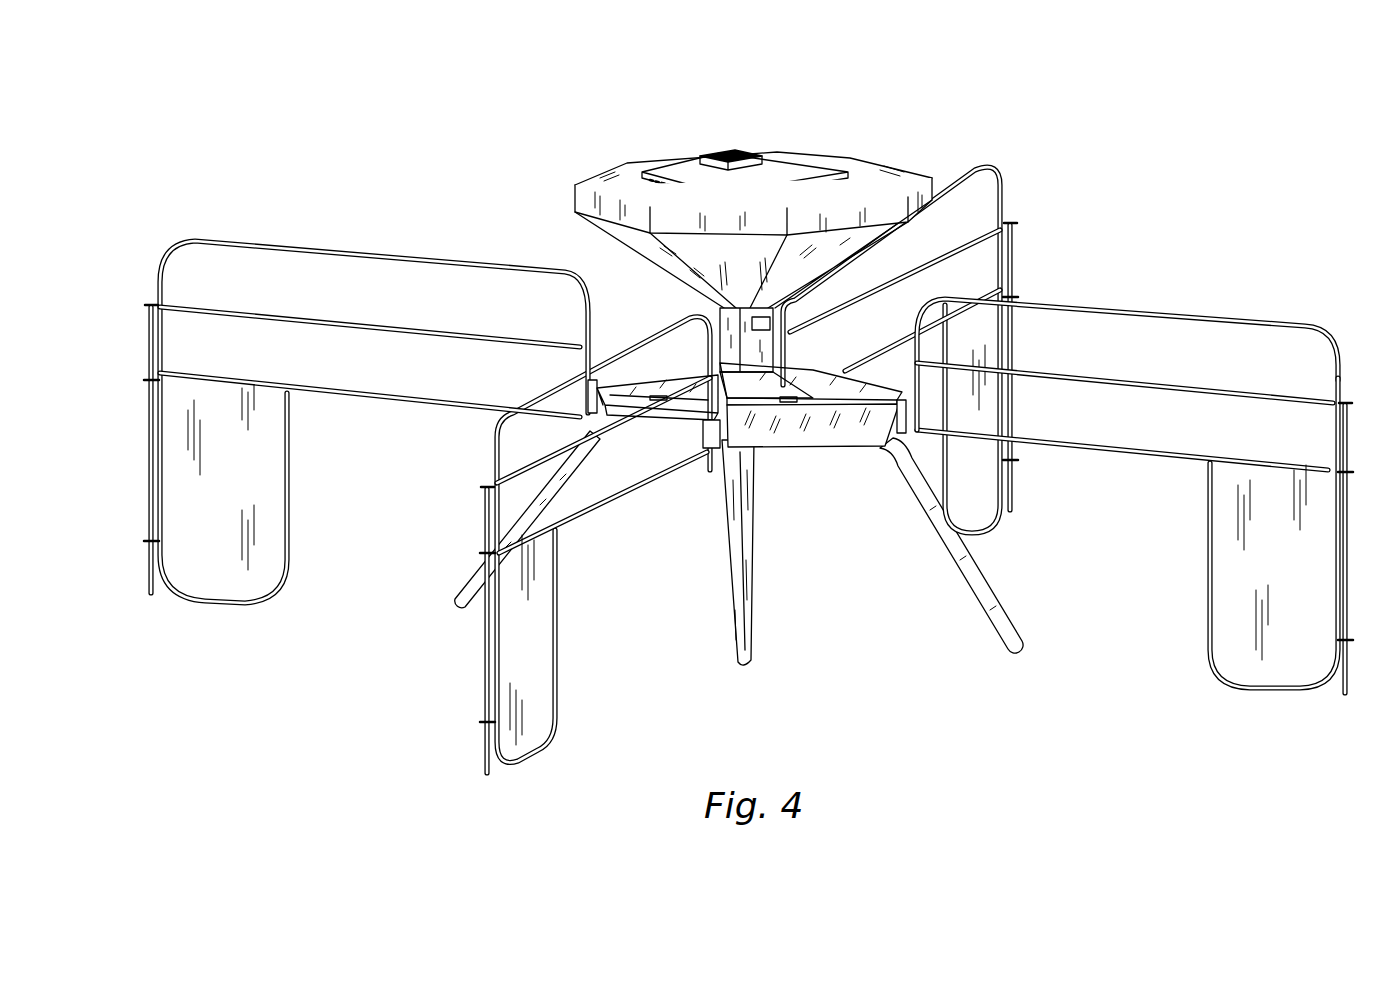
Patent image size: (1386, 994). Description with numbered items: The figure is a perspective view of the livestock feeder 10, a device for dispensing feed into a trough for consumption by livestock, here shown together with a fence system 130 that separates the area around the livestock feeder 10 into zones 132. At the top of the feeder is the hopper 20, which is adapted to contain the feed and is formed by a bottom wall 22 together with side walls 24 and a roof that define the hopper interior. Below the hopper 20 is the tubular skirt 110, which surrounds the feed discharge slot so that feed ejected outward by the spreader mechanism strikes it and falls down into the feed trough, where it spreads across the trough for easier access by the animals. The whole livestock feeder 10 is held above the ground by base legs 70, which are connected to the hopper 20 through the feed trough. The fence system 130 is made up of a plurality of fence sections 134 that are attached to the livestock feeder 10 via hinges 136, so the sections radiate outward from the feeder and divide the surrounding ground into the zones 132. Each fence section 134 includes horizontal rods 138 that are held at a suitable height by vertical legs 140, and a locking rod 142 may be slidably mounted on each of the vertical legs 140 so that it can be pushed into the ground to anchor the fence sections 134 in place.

The livestock feeder 10 is at (1077, 107).
The hopper 20 is at (580, 200).
The bottom wall 22 is at (676, 280).
The side walls 24 is at (925, 205).
The base legs 70 is at (735, 545).
The tubular skirt 110 is at (778, 345).
The fence system 130 is at (1229, 258).
The zones 132 is at (537, 194).
The fence sections 134 is at (283, 243).
The hinges 136 is at (903, 400).
The horizontal rods 138 is at (1283, 388).
The vertical legs 140 is at (1333, 588).
The locking rod 142 is at (1345, 612).